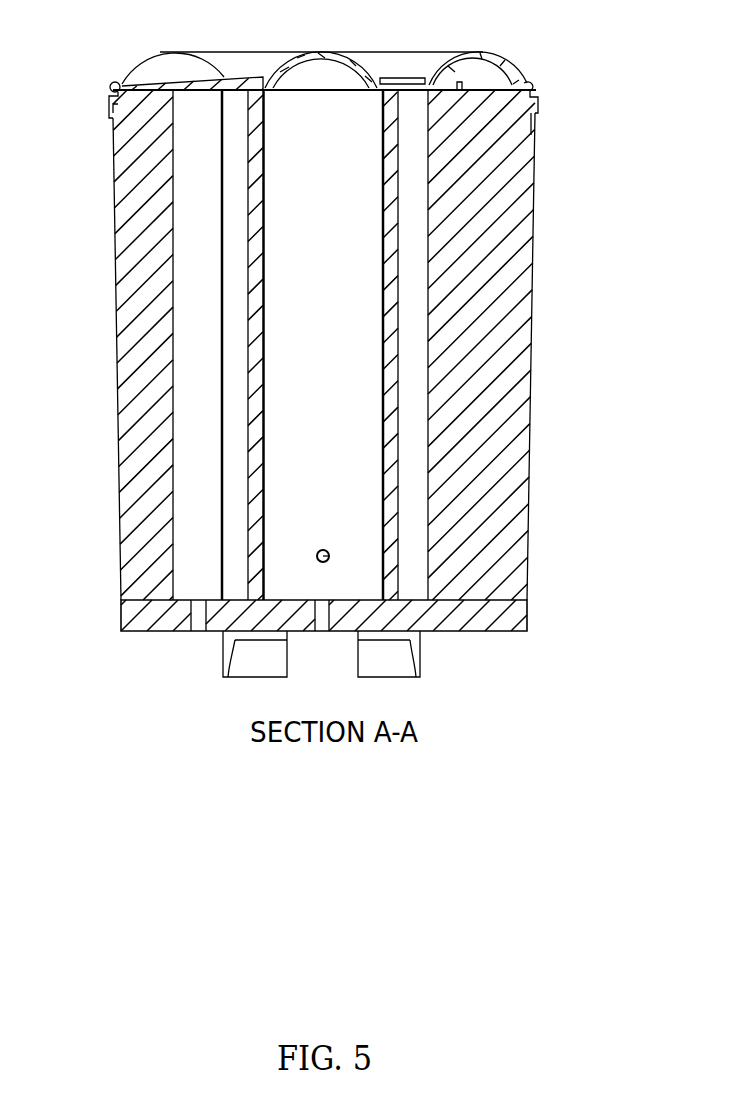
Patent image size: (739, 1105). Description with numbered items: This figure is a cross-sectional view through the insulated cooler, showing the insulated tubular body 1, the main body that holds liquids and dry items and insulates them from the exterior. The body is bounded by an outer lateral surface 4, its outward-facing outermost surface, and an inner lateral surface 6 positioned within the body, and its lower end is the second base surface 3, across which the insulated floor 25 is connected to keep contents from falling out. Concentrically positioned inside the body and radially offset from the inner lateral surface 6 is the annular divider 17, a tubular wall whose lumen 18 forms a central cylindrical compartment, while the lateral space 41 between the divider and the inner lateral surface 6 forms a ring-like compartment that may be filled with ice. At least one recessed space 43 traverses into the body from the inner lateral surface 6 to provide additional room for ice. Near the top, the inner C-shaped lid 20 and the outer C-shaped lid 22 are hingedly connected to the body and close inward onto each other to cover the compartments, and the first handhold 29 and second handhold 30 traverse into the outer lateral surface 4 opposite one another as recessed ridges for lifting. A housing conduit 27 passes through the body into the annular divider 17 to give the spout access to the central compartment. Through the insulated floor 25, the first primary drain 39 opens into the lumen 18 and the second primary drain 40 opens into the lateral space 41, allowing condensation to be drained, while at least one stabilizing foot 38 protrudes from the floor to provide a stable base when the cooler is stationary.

The insulated tubular body 1 is at (536, 443).
The second base surface 3 is at (297, 600).
The outer lateral surface 4 is at (536, 282).
The inner lateral surface 6 is at (430, 218).
The annular divider 17 is at (264, 264).
The lumen 18 is at (311, 110).
The inner C-shaped lid 20 is at (378, 71).
The outer C-shaped lid 22 is at (164, 60).
The insulated floor 25 is at (528, 612).
The housing conduit 27 is at (329, 552).
The first handhold 29 is at (533, 120).
The second handhold 30 is at (113, 121).
The stabilizing foot 38 is at (288, 650).
The first primary drain 39 is at (322, 598).
The second primary drain 40 is at (199, 634).
The lateral space 41 is at (405, 327).
The recessed space 43 is at (205, 385).